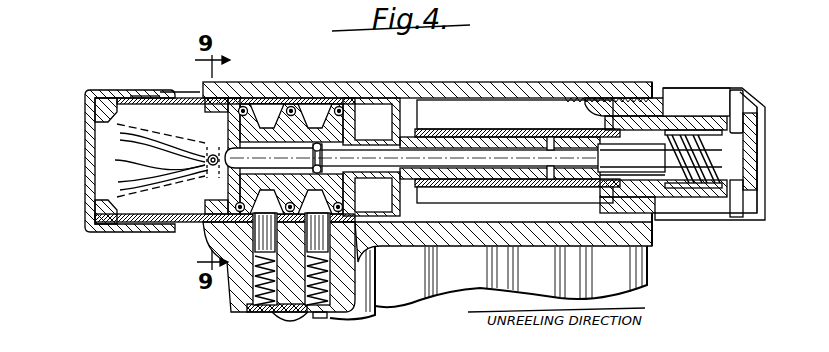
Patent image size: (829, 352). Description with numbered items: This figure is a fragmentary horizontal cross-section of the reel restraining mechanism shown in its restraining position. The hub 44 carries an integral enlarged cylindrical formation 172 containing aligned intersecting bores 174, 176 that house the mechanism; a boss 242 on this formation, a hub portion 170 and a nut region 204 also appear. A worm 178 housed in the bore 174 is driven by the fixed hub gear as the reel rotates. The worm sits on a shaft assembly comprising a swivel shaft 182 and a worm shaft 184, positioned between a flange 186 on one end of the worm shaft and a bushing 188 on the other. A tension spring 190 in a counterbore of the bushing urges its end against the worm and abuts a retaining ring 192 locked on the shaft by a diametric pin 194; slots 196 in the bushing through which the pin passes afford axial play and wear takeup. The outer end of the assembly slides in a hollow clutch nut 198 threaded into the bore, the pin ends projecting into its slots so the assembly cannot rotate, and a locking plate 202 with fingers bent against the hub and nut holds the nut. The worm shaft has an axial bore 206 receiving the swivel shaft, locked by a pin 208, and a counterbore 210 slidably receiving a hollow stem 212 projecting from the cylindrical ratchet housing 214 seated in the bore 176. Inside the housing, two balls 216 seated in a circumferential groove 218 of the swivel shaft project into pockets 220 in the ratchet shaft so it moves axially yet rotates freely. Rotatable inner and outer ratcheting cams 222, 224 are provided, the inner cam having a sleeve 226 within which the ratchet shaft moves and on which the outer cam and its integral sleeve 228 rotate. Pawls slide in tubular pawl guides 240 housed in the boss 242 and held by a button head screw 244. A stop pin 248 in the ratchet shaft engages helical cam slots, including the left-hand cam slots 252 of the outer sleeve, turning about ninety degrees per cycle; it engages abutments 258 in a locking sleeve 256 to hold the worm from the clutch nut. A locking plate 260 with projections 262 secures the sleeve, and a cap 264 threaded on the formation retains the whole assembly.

The hub 44 is at (404, 305).
The housing portion 170 is at (373, 196).
The cylindrical formation 172 is at (434, 236).
The bore 174 is at (446, 83).
The bore 176 is at (398, 100).
The worm 178 is at (511, 120).
The swivel shaft 182 is at (441, 190).
The worm shaft 184 is at (672, 126).
The flange 186 is at (417, 127).
The bushing 188 is at (656, 116).
The tension spring 190 is at (656, 140).
The retaining ring 192 is at (752, 136).
The pin 194 is at (749, 122).
The slots 196 is at (739, 148).
The hollow clutch nut 198 is at (660, 228).
The locking plate 202 is at (655, 83).
The nut 204 is at (616, 98).
The axial bore 206 is at (597, 153).
The pin 208 is at (567, 100).
The counterbore 210 is at (483, 140).
The hollow stem 212 is at (384, 140).
The ratchet housing 214 is at (308, 104).
The balls 216 is at (360, 105).
The circumferential groove 218 is at (416, 158).
The pockets 220 is at (340, 112).
The inner ratcheting cam 222 is at (312, 118).
The outer ratcheting cam 224 is at (270, 108).
The sleeve 226 is at (270, 158).
The sleeve 228 is at (230, 104).
The tubular pawl guides 240 is at (260, 313).
The boss 242 is at (233, 303).
The button head screw 244 is at (296, 318).
The stop pin 248 is at (167, 92).
The cam slots 252 is at (110, 132).
The locking sleeve 256 is at (155, 95).
The abutments 258 is at (170, 120).
The locking plate 260 is at (115, 161).
The projections 262 is at (87, 112).
The cap 264 is at (97, 234).